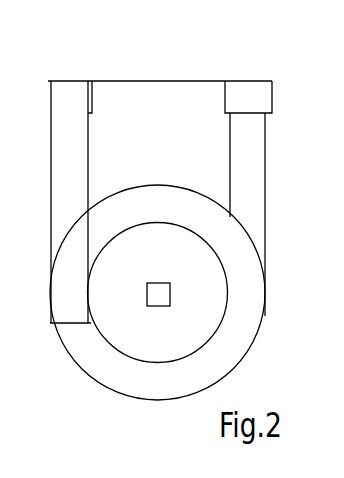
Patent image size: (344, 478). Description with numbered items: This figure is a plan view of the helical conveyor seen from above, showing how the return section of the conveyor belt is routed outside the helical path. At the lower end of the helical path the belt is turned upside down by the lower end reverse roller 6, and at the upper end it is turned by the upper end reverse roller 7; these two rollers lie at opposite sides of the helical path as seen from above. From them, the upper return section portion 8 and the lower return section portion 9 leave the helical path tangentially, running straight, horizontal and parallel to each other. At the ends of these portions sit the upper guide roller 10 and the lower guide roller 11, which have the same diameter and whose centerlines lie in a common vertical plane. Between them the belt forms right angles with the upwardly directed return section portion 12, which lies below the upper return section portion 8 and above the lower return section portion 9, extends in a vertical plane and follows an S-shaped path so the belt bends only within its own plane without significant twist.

The lower end reverse roller 6 is at (268, 289).
The upper end reverse roller 7 is at (50, 302).
The upper return section portion 8 is at (68, 155).
The lower return section portion 9 is at (258, 148).
The upper guide roller 10 is at (50, 102).
The lower guide roller 11 is at (244, 95).
The upwardly directed return section portion 12 is at (135, 82).